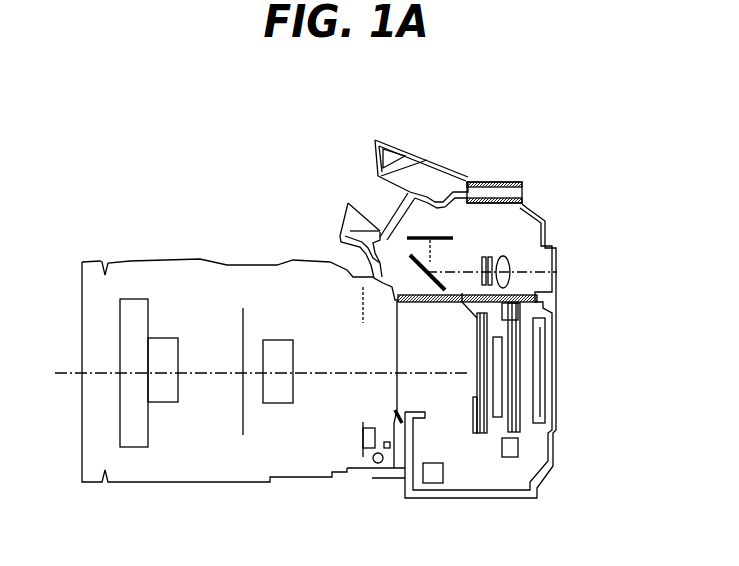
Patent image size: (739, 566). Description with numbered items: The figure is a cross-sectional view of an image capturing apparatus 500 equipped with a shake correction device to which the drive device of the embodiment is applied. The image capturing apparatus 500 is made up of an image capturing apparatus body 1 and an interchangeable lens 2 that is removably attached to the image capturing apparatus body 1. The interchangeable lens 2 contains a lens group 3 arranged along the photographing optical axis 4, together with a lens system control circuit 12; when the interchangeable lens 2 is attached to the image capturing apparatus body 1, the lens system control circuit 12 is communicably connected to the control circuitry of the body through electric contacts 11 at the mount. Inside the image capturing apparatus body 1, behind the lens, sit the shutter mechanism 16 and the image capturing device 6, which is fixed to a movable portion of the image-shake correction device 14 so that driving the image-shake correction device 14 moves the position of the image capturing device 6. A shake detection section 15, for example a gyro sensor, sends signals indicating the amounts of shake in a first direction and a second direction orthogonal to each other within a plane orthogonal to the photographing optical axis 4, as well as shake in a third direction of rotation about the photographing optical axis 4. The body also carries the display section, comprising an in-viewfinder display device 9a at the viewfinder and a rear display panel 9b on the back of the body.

The image capturing apparatus 500 is at (492, 116).
The image capturing apparatus body 1 is at (540, 196).
The interchangeable lens 2 is at (188, 257).
The lens group 3 is at (278, 422).
The photographing optical axis 4 is at (60, 377).
The image capturing device 6 is at (500, 362).
The in-viewfinder display device 9a is at (548, 398).
The rear display panel 9b is at (518, 262).
The electric contacts 11 is at (380, 465).
The lens system control circuit 12 is at (362, 437).
The image-shake correction device 14 is at (510, 452).
The shake detection section 15 is at (435, 478).
The shutter mechanism 16 is at (481, 437).